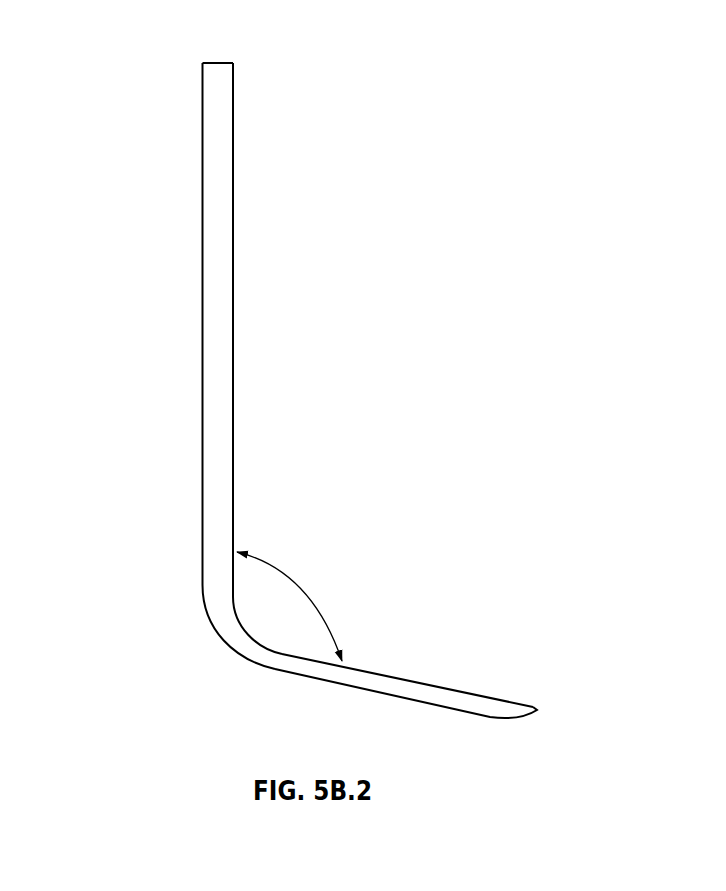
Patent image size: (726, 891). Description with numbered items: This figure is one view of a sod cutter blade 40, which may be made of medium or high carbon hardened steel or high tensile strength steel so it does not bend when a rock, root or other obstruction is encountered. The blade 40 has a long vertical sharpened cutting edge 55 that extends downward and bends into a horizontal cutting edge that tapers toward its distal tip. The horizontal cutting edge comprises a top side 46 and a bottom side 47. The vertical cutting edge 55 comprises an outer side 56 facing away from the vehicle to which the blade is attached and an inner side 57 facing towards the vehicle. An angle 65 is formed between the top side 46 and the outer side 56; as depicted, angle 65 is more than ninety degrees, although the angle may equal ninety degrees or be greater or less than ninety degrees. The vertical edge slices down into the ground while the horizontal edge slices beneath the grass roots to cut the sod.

The sod cutter blade 40 is at (285, 392).
The top side 46 is at (390, 666).
The bottom side 47 is at (361, 699).
The vertical sharpened cutting edge 55 is at (191, 478).
The outer side 56 is at (236, 423).
The inner side 57 is at (199, 423).
The angle 65 is at (300, 589).